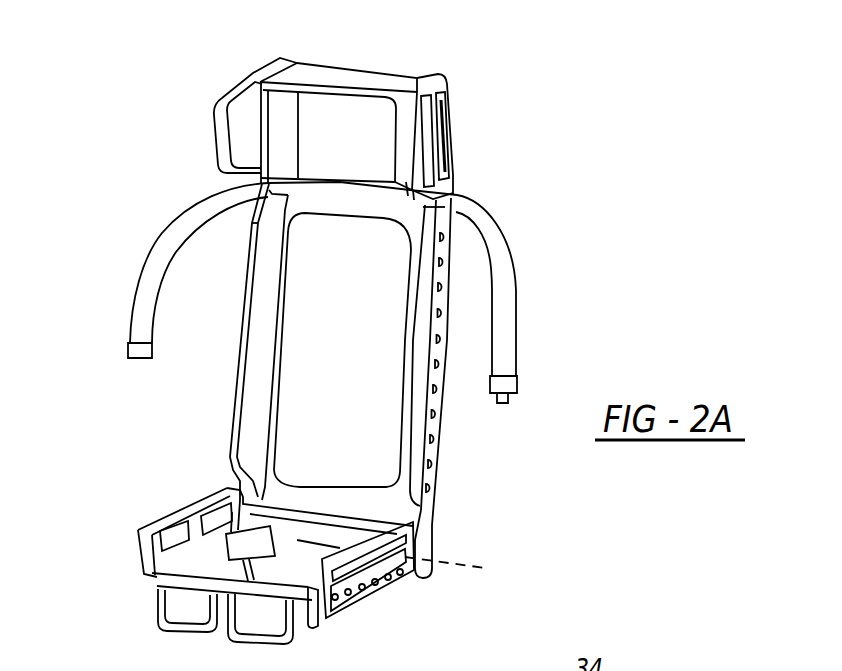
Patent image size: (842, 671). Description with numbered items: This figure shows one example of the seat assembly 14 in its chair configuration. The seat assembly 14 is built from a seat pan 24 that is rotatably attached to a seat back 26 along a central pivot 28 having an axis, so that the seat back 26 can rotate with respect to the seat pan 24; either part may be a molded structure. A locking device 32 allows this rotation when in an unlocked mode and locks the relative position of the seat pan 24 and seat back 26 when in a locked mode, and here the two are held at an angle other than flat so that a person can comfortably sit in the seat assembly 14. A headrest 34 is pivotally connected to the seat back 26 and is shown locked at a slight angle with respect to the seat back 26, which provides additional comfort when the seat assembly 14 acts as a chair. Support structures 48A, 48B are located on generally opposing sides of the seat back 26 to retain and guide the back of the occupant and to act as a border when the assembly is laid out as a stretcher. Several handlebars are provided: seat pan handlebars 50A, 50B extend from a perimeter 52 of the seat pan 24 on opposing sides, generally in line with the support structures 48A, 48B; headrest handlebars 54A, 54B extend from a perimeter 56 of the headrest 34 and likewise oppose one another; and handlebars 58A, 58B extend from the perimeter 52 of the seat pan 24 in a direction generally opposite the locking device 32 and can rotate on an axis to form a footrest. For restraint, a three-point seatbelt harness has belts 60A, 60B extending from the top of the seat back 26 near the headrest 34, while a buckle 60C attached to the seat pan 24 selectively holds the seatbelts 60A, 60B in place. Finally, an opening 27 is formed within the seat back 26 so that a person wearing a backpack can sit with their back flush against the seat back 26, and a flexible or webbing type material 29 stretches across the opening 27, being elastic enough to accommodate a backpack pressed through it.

The seat assembly 14 is at (524, 184).
The seat pan 24 is at (210, 560).
The seat back 26 is at (253, 370).
The opening 27 is at (270, 420).
The central pivot 28 is at (460, 557).
The flexible or webbing type material 29 is at (327, 278).
The locking device 32 is at (430, 577).
The headrest 34 is at (347, 123).
The support structure 48A is at (240, 313).
The support structure 48B is at (420, 430).
The seat pan handlebar 50A is at (137, 530).
The seat pan handlebar 50B is at (343, 557).
The perimeter of the seat pan 52 is at (183, 568).
The headrest handlebar 54A is at (217, 122).
The headrest handlebar 54B is at (420, 153).
The perimeter of the headrest 56 is at (263, 133).
The handlebar 58A is at (185, 633).
The handlebar 58B is at (263, 643).
The seatbelt 60A is at (145, 322).
The seatbelt 60B is at (503, 300).
The buckle 60C is at (240, 538).